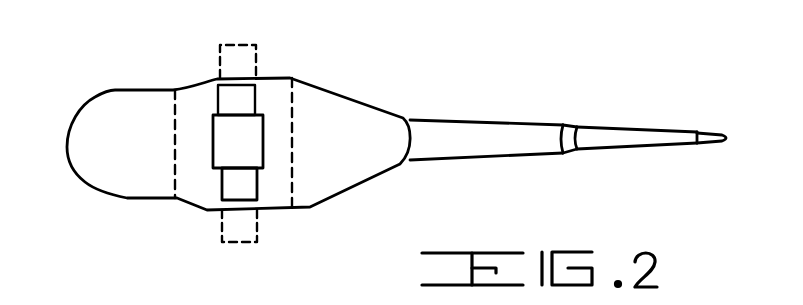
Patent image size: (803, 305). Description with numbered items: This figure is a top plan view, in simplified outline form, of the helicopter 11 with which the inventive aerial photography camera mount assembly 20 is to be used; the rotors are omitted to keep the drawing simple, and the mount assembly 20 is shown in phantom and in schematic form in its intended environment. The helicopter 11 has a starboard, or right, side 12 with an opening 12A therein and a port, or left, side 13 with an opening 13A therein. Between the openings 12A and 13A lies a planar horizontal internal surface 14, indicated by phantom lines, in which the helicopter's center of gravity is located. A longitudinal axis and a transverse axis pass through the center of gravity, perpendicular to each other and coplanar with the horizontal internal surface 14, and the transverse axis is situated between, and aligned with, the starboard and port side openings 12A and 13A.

The helicopter 11 is at (536, 69).
The starboard side 12 is at (268, 77).
The starboard side opening 12A is at (238, 78).
The port side 13 is at (266, 200).
The port side opening 13A is at (237, 215).
The planar horizontal internal surface 14 is at (197, 192).
The aerial photography camera mount assembly 20 is at (211, 105).